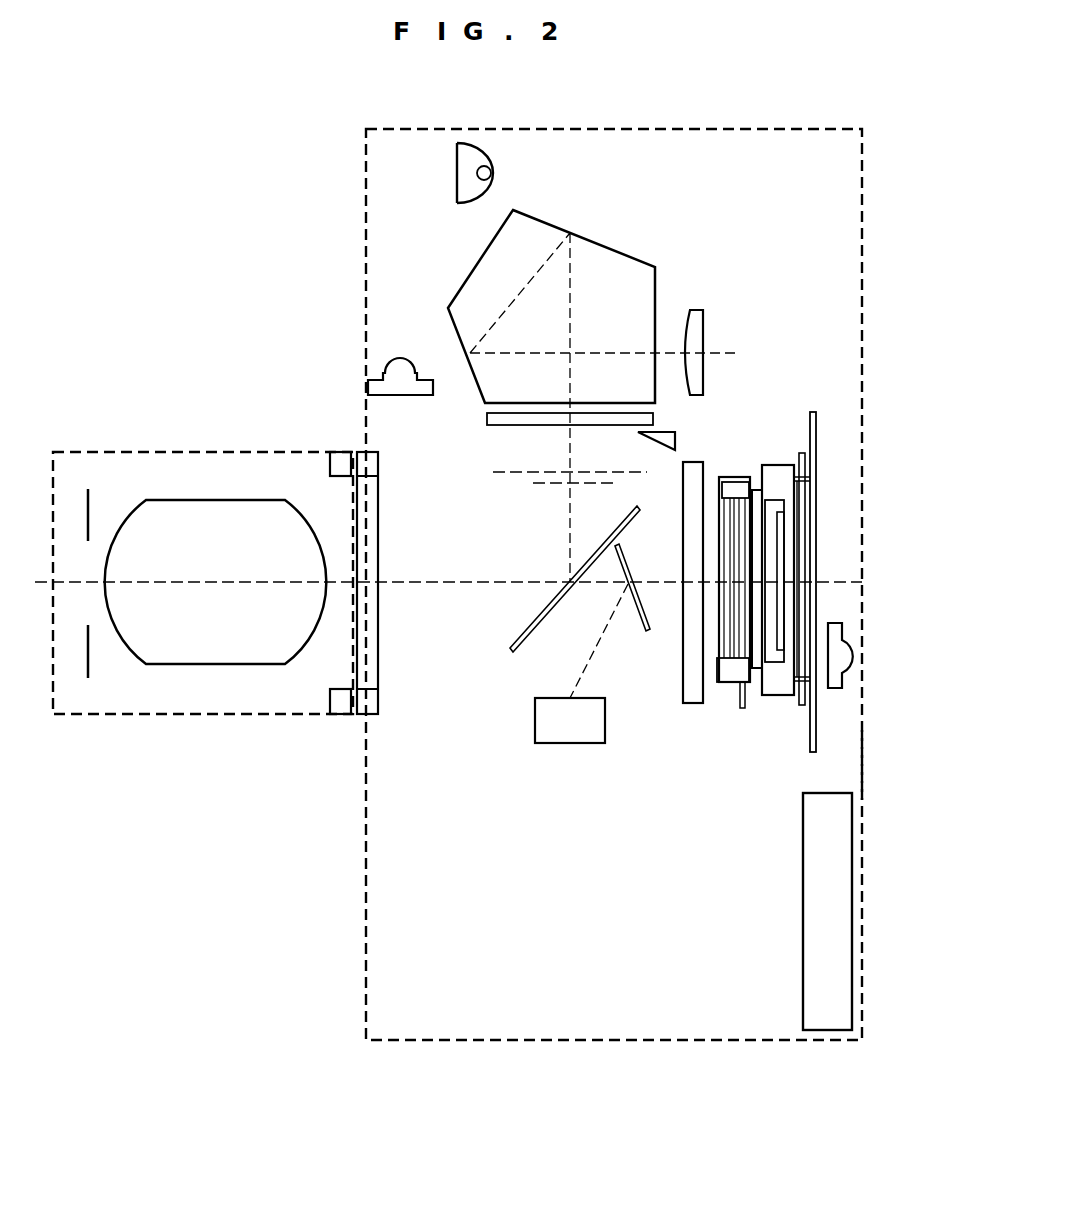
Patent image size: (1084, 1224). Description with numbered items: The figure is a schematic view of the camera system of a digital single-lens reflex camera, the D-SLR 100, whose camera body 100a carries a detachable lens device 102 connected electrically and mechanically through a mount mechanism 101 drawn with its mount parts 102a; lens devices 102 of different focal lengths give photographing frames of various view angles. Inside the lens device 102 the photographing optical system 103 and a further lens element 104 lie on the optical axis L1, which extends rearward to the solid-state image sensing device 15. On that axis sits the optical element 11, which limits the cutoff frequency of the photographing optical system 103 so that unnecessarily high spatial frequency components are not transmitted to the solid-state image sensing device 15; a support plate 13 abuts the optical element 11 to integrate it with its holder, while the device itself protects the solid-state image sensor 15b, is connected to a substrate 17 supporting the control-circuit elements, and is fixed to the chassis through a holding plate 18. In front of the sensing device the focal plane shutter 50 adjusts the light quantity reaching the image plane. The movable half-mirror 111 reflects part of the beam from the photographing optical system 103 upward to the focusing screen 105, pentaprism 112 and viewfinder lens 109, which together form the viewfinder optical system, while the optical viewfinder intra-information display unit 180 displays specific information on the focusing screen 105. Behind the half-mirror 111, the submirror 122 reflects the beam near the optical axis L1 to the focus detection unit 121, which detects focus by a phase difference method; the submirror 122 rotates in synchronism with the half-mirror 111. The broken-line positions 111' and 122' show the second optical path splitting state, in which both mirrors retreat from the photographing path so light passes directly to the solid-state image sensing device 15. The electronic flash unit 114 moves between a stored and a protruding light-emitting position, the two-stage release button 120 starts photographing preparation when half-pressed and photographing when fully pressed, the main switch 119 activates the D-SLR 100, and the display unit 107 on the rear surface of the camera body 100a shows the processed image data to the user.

The D-SLR 100 is at (620, 1040).
The camera body 100a is at (865, 763).
The optical axis L1 is at (230, 580).
The lens device 102 is at (168, 447).
The photographing optical system 103 is at (166, 644).
The aperture / lens element 104 is at (89, 505).
The mount mechanism 101 is at (368, 622).
The lens mount claws 102a is at (335, 700).
The electronic flash unit 114 is at (473, 177).
The pentaprism 112 is at (587, 253).
The focusing screen 105 is at (487, 418).
The viewfinder lens 109 is at (692, 310).
The release button 120 is at (402, 365).
The optical viewfinder intra-information display unit 180 is at (678, 432).
The submirror retreated position 122' is at (443, 426).
The half-mirror retreated position 111' is at (435, 411).
The half-mirror 111 is at (550, 631).
The submirror 122 is at (749, 621).
The focus detection unit 121 is at (555, 737).
The focal plane shutter 50 is at (683, 627).
The optical element 11 is at (719, 515).
The support plate 13 is at (745, 478).
The solid-state image sensing device 15 is at (778, 455).
The solid-state image sensor 15b is at (785, 528).
The substrate 17 is at (801, 706).
The holding plate 18 is at (818, 430).
The main switch 119 is at (850, 652).
The display unit 107 is at (830, 922).